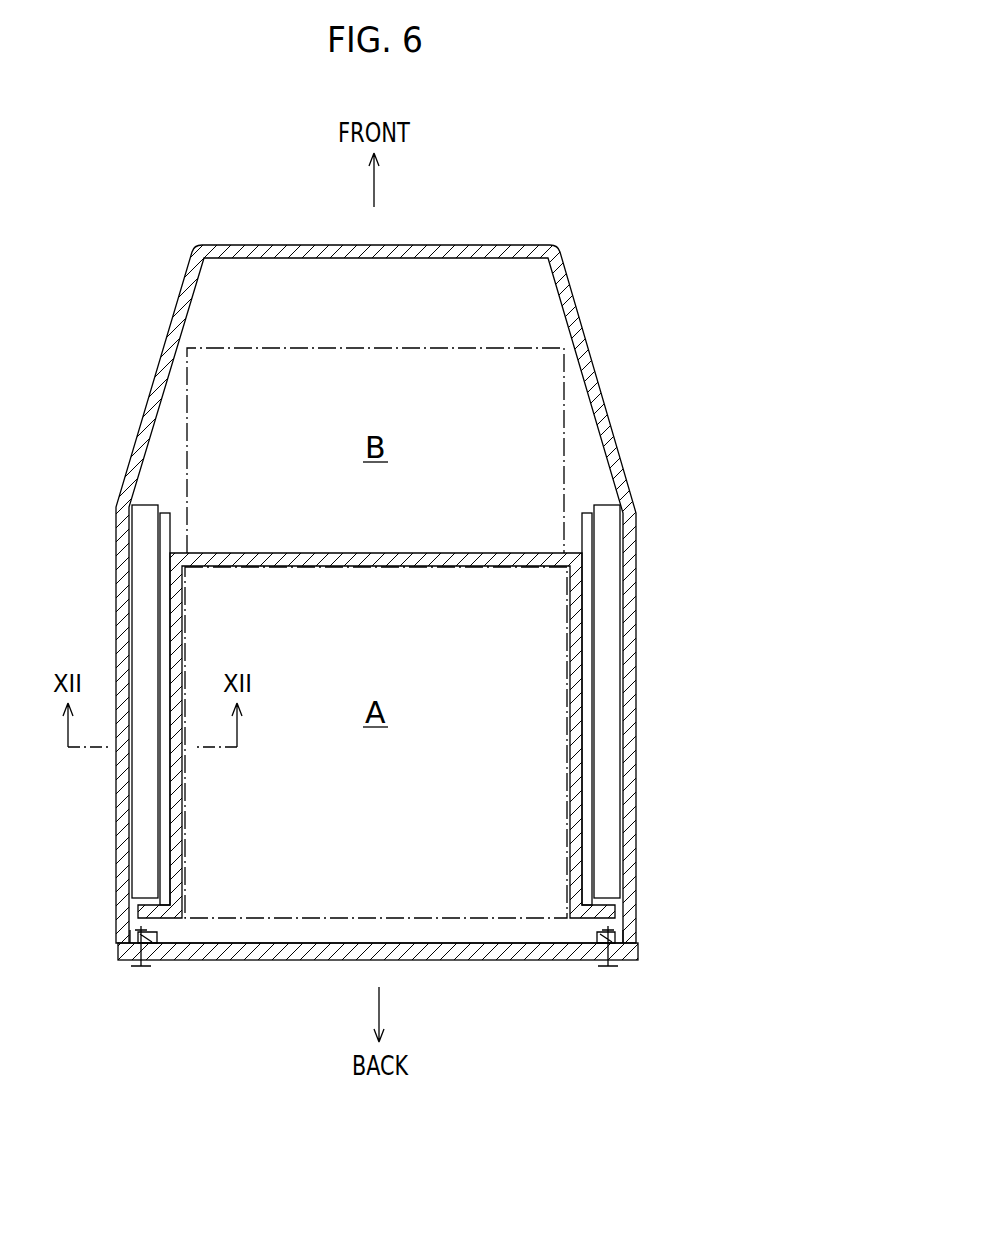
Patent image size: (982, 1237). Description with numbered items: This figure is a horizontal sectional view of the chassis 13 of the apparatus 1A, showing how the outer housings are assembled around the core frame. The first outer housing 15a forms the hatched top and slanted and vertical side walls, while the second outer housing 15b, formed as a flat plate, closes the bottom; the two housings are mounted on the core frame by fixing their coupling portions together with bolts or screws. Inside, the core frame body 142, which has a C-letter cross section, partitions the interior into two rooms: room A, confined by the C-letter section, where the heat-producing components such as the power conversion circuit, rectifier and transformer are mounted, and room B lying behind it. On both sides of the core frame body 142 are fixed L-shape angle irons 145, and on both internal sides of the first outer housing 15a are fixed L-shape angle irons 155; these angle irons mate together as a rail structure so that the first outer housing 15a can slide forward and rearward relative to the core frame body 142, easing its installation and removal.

The electronic apparatus 1A is at (376, 593).
The chassis 13 is at (398, 598).
The first outer housing 15a is at (590, 363).
The second outer housing 15b is at (532, 961).
The core frame body 142 is at (578, 686).
The L-shape angle iron 145 is at (172, 525).
The L-shape angle iron 155 is at (140, 588).